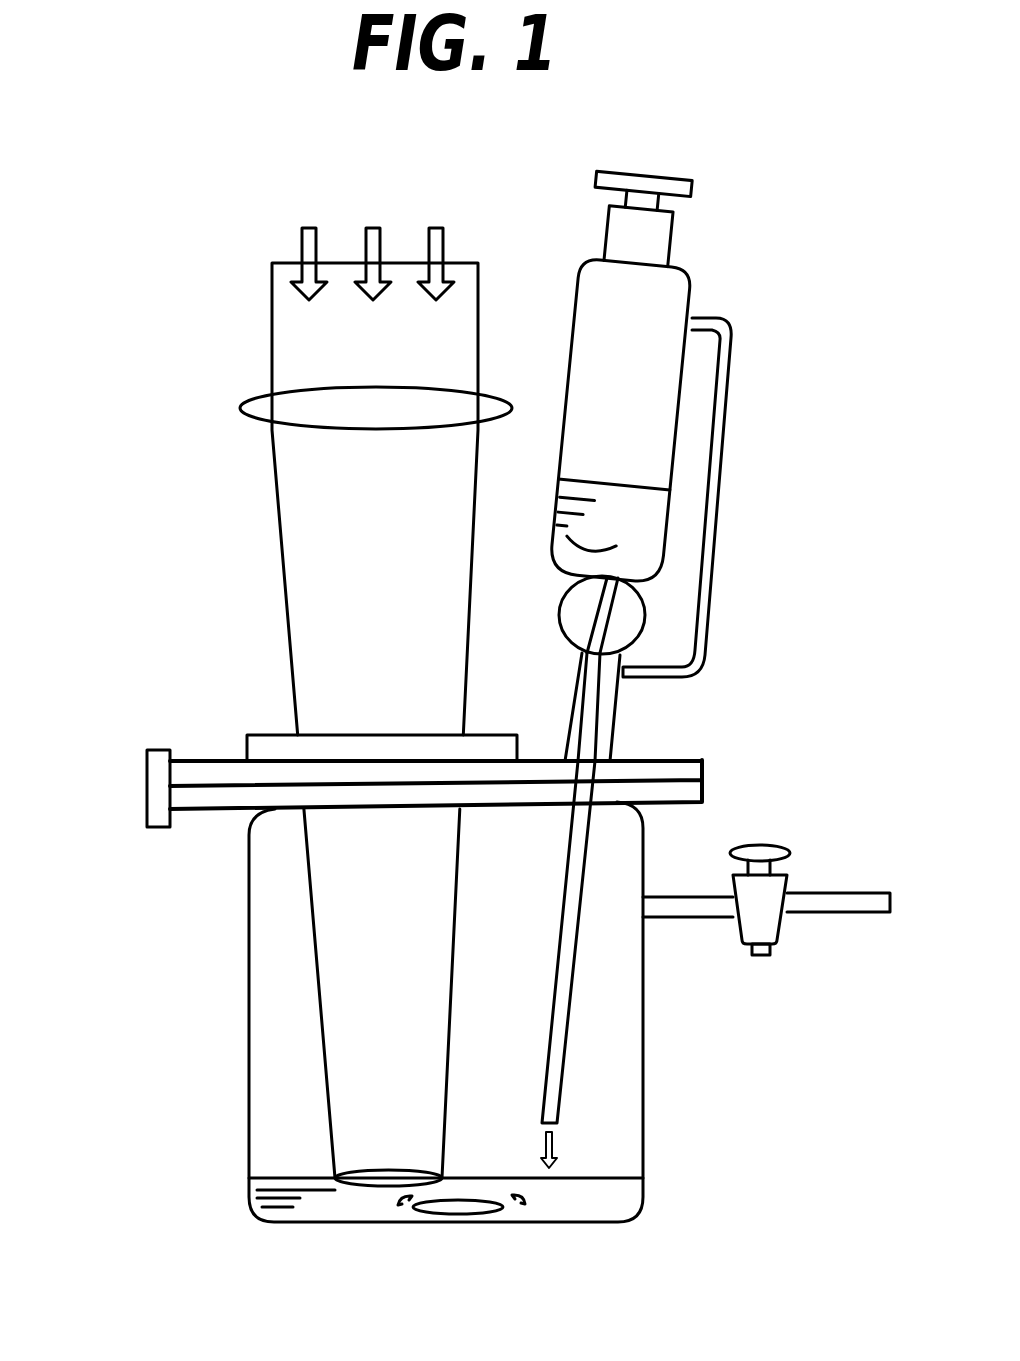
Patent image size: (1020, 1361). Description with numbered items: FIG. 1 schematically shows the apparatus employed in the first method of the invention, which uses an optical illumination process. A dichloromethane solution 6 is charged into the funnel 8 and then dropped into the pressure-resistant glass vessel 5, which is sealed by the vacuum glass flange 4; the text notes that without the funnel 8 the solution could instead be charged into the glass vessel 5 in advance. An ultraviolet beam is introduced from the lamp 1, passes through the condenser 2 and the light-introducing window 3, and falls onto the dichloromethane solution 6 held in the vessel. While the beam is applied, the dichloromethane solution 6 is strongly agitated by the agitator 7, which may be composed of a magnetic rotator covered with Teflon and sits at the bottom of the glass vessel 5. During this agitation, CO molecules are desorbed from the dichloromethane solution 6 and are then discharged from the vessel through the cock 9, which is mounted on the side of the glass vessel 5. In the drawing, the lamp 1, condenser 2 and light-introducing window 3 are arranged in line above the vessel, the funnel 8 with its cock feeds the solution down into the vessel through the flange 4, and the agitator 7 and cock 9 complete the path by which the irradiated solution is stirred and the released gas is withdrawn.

The lamp 1 is at (372, 231).
The condenser 2 is at (297, 412).
The light-introducing window 3 is at (273, 747).
The vacuum glass flange 4 is at (157, 793).
The pressure-resistant glass vessel 5 is at (248, 1010).
The dichloromethane solution 6 is at (560, 543).
The agitator 7 is at (457, 1217).
The funnel 8 is at (693, 292).
The cock 9 is at (770, 925).